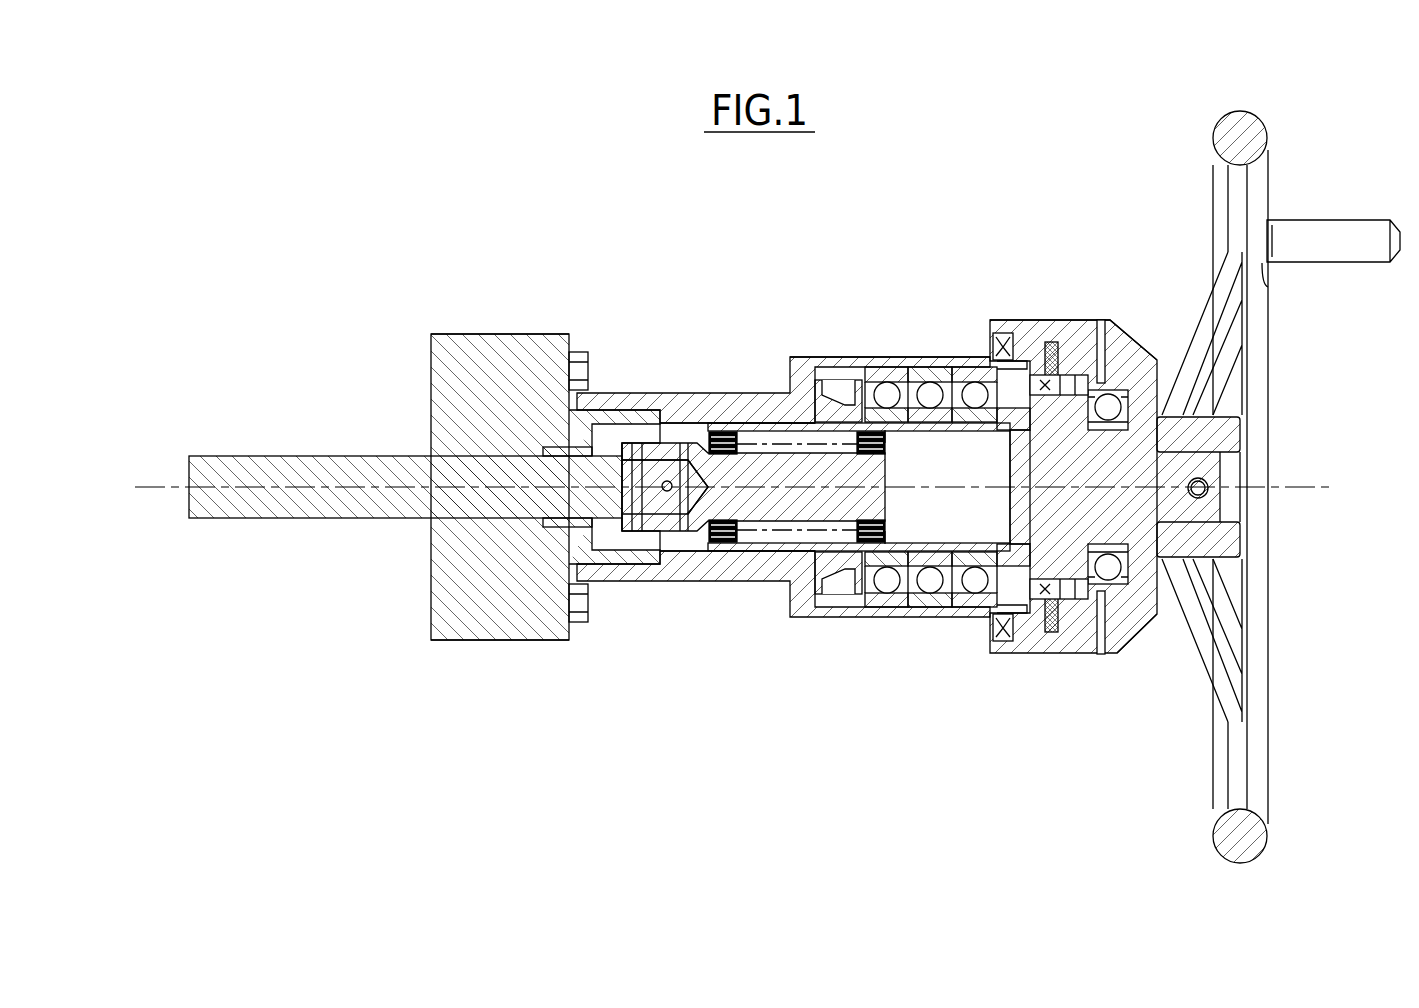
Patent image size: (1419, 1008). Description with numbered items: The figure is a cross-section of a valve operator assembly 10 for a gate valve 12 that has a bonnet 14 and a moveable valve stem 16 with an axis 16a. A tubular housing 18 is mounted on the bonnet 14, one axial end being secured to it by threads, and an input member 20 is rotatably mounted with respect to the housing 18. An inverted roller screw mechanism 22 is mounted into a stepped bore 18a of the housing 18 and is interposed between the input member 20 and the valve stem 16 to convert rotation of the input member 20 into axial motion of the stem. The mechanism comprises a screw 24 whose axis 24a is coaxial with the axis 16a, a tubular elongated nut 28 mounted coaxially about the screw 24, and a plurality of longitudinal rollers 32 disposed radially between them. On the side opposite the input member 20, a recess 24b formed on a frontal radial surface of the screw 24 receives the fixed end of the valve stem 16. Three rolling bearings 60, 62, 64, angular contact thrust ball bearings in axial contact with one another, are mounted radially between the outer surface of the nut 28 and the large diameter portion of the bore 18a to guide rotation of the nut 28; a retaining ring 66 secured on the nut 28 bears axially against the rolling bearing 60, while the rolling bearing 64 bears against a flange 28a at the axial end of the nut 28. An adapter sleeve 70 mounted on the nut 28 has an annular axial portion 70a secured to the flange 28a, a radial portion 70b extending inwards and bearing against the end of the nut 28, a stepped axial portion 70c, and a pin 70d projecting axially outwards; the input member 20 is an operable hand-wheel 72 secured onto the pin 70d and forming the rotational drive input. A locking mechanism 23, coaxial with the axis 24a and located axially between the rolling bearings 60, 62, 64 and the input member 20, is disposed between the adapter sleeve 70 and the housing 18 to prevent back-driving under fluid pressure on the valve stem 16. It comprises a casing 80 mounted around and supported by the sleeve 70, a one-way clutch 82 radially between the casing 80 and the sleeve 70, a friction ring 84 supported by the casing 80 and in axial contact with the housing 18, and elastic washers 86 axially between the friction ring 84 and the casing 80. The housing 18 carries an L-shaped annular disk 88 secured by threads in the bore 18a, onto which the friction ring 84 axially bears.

The valve operator assembly 10 is at (789, 330).
The gate valve 12 is at (508, 332).
The bonnet 14 is at (471, 333).
The valve stem 16 is at (249, 460).
The axis 16a is at (160, 480).
The tubular housing 18 is at (819, 354).
The bore 18a is at (712, 408).
The input member 20 is at (1315, 184).
The inverted roller screw mechanism 22 is at (738, 560).
The locking mechanism 23 is at (1132, 306).
The screw 24 is at (762, 503).
The axis 24a is at (160, 480).
The recess 24b is at (677, 503).
The nut 28 is at (720, 553).
The flange 28a is at (986, 350).
The longitudinal rollers 32 is at (793, 538).
The rolling bearing 60 is at (882, 365).
The rolling bearing 62 is at (920, 366).
The rolling bearing 64 is at (965, 368).
The retaining ring 66 is at (848, 378).
The adapter sleeve 70 is at (1226, 500).
The annular axial portion 70a is at (1030, 375).
The radial portion 70b is at (1048, 545).
The stepped axial portion 70c is at (1117, 517).
The pin 70d is at (1188, 470).
The hand-wheel 72 is at (1262, 751).
The casing 80 is at (1149, 344).
The one-way clutch 82 is at (1071, 580).
The friction ring 84 is at (1058, 340).
The elastic washers 86 is at (1068, 342).
The annular disk 88 is at (1012, 643).